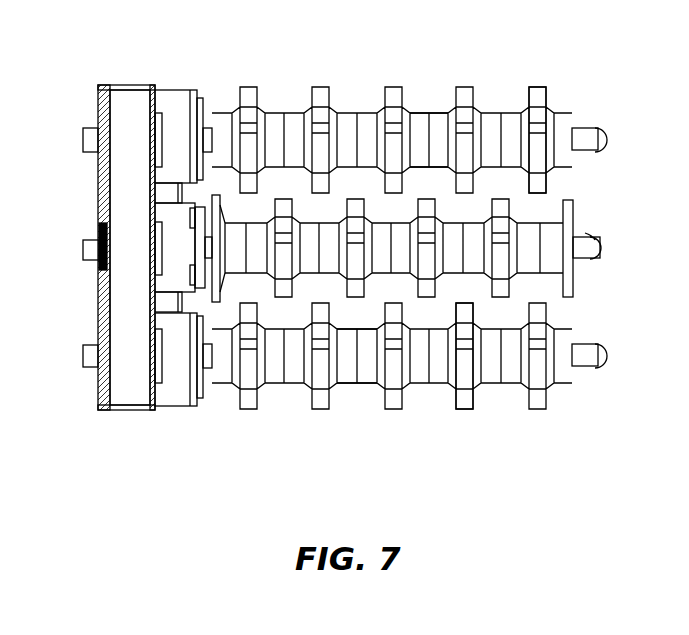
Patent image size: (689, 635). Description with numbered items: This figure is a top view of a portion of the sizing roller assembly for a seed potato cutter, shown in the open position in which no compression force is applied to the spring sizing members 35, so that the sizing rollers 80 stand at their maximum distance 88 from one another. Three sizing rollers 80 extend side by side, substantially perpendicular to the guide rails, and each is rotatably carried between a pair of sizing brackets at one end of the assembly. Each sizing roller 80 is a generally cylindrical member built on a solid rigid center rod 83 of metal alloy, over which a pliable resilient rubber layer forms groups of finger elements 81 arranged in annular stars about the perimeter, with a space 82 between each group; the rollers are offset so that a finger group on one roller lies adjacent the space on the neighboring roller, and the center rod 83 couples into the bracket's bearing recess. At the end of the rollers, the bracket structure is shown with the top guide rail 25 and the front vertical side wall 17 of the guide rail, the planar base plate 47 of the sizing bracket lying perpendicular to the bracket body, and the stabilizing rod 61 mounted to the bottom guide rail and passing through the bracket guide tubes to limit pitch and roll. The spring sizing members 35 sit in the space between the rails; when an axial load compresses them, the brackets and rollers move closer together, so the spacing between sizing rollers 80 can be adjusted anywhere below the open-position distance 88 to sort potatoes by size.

The front vertical side wall 17 is at (157, 88).
The top guide rail 25 is at (130, 400).
The spring sizing member 35 is at (100, 92).
The planar base plate 47 is at (172, 92).
The stabilizing rod 61 is at (160, 187).
The sizing roller 80 is at (362, 112).
The finger element 81 is at (537, 95).
The space between groups of finger elements 82 is at (425, 108).
The center rod 83 is at (85, 248).
The maximum distance between sizing rollers 88 is at (567, 313).